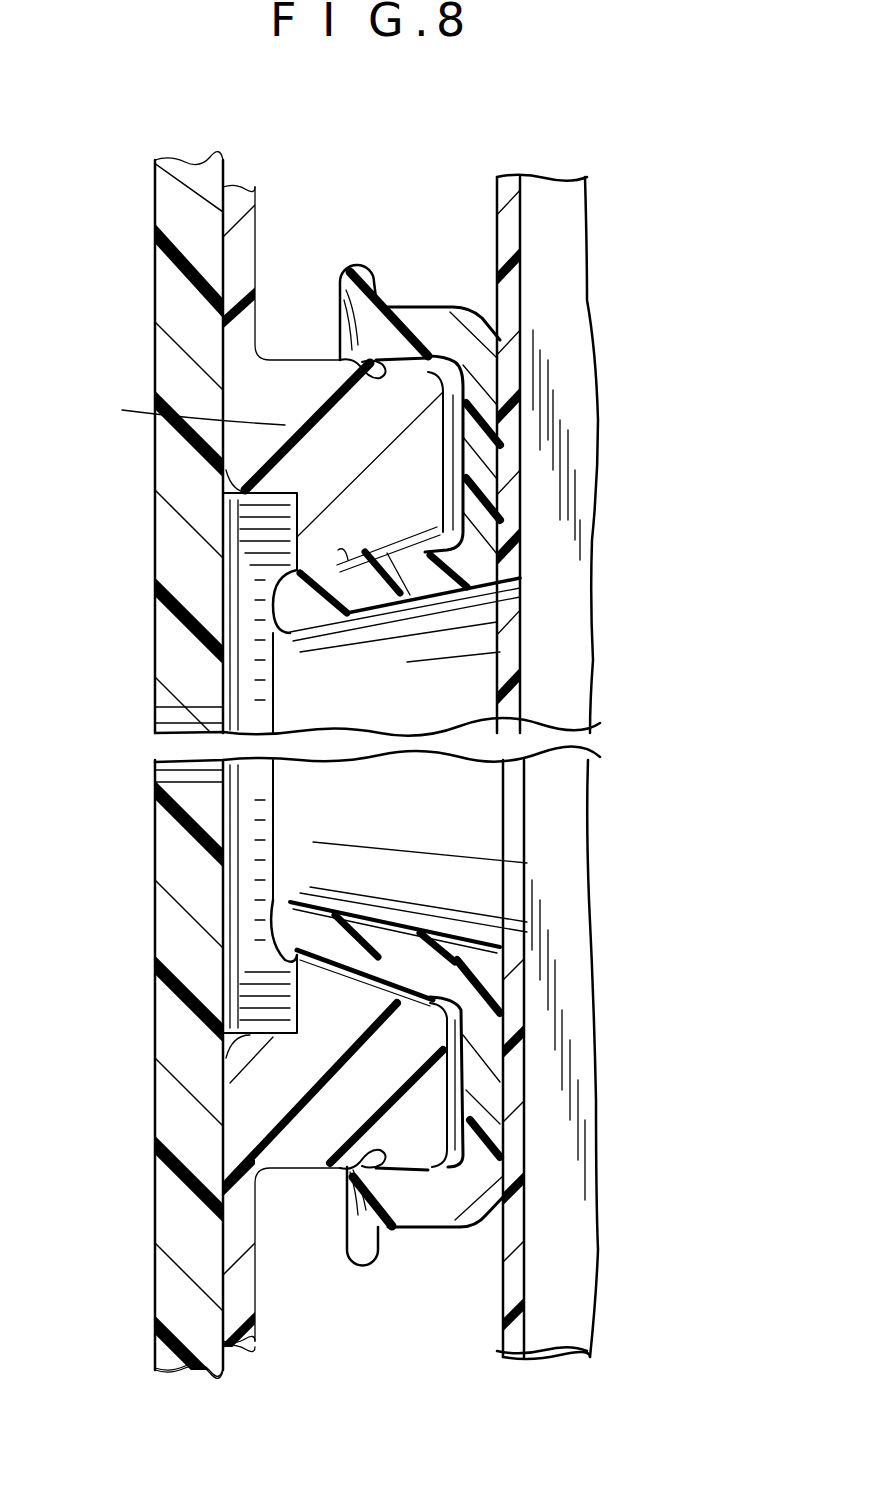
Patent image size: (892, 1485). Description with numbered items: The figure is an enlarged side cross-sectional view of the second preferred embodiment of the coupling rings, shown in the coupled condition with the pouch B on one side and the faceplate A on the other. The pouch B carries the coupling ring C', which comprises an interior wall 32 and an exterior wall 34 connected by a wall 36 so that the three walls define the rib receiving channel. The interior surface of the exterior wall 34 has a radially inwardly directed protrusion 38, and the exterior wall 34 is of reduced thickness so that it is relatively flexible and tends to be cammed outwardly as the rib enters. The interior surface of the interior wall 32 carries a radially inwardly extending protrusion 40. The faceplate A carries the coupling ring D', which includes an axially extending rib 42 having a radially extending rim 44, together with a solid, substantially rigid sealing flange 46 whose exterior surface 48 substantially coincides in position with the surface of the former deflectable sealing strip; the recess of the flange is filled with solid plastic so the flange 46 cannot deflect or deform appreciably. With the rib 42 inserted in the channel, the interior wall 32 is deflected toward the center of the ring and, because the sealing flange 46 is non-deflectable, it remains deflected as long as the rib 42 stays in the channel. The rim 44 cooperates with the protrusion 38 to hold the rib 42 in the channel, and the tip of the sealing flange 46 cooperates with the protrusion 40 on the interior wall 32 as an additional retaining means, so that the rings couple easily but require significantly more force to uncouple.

The faceplate A is at (140, 300).
The pouch B is at (605, 415).
The coupling ring C' is at (406, 704).
The coupling ring D' is at (188, 411).
The interior wall 32 is at (437, 600).
The exterior wall 34 is at (410, 318).
The wall 36 is at (485, 487).
The protrusion 38 is at (327, 367).
The protrusion 40 is at (290, 570).
The rib 42 is at (325, 457).
The rim 44 is at (420, 385).
The sealing flange 46 is at (363, 537).
The exterior surface 48 is at (338, 550).